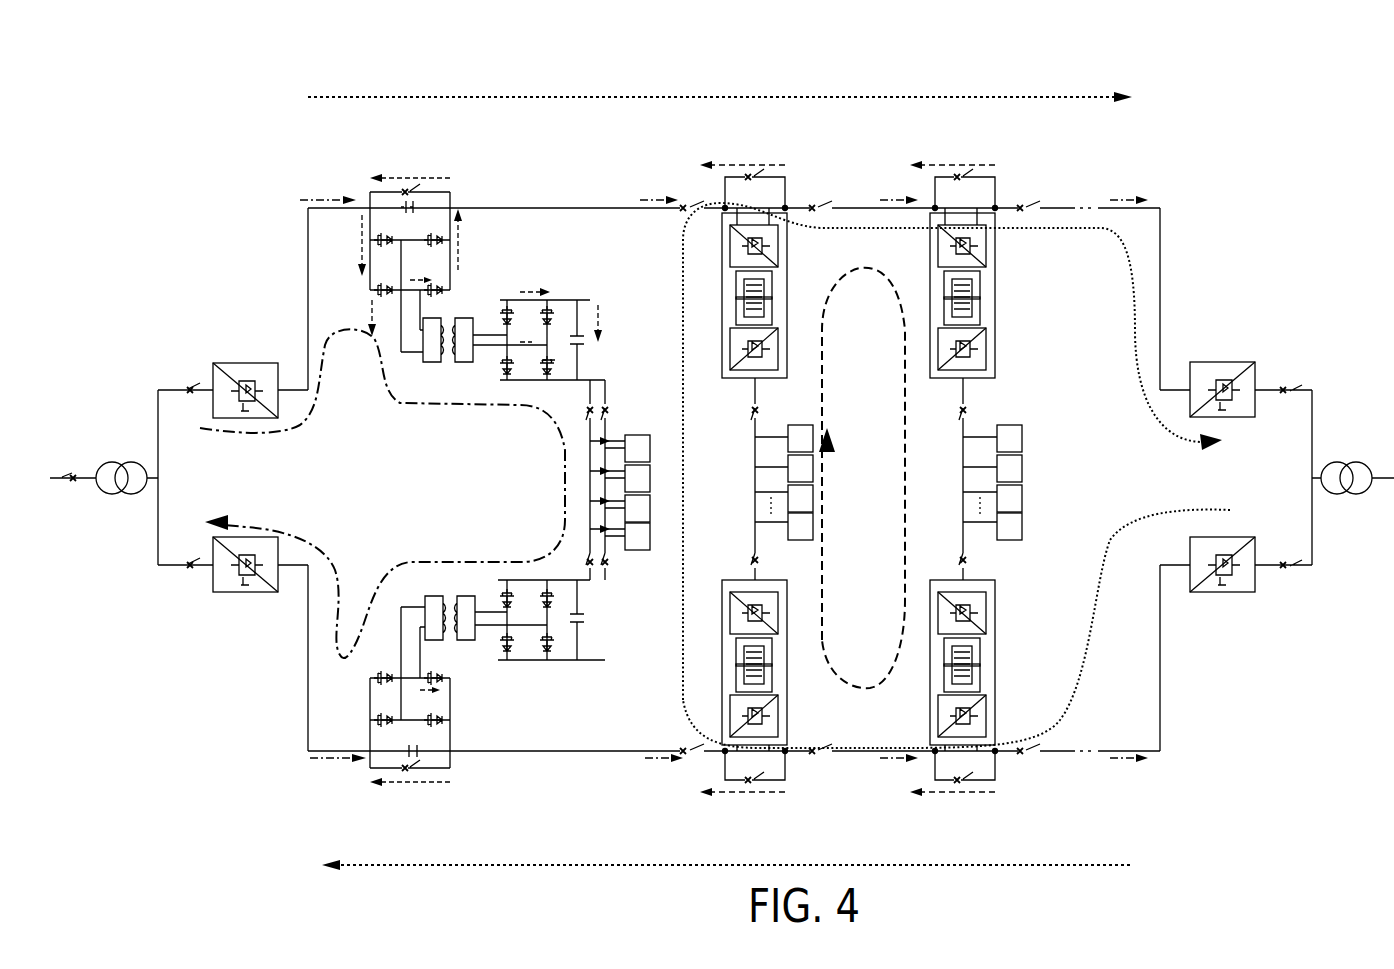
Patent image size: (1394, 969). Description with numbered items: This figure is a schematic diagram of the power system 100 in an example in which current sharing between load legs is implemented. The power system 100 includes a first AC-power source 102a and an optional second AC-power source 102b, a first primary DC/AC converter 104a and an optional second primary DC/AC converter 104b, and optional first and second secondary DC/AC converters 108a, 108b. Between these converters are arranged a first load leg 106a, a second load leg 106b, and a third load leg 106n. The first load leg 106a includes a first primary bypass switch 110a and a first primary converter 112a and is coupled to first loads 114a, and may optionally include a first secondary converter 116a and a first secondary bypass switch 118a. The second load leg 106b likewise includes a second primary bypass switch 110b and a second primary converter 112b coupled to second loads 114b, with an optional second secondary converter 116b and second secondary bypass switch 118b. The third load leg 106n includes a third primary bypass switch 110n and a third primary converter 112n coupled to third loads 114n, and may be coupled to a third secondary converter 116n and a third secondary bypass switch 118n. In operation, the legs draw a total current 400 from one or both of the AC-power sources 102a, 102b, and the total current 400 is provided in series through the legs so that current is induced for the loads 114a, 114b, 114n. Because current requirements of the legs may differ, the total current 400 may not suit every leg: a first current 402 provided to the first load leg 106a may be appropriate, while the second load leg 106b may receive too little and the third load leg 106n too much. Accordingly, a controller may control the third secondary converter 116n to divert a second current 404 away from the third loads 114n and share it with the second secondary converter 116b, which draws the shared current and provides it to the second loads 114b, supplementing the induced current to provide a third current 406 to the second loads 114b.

The power system 100 is at (158, 128).
The first AC-power source 102a is at (110, 460).
The second AC-power source 102b is at (1346, 460).
The first primary DC/AC converter 104a is at (246, 362).
The second primary DC/AC converter 104b is at (1238, 362).
The first load leg 106a is at (365, 130).
The second load leg 106b is at (715, 125).
The third load leg 106n is at (925, 120).
The first secondary DC/AC converter 108a is at (248, 593).
The second secondary DC/AC converter 108b is at (1242, 537).
The first primary bypass switch 110a is at (410, 190).
The second primary bypass switch 110b is at (755, 175).
The third primary bypass switch 110n is at (965, 175).
The first primary converter 112a is at (488, 292).
The second primary converter 112b is at (743, 380).
The third primary converter 112n is at (997, 310).
The first loads 114a is at (625, 398).
The second loads 114b is at (812, 402).
The third loads 114n is at (1025, 402).
The first secondary converter 116a is at (578, 680).
The second secondary converter 116b is at (790, 722).
The third secondary converter 116n is at (1000, 600).
The first secondary bypass switch 118a is at (410, 772).
The second secondary bypass switch 118b is at (760, 784).
The third secondary bypass switch 118n is at (970, 784).
The total current 400 is at (553, 100).
The first current 402 is at (478, 560).
The second current 404 is at (684, 262).
The third current 406 is at (858, 268).